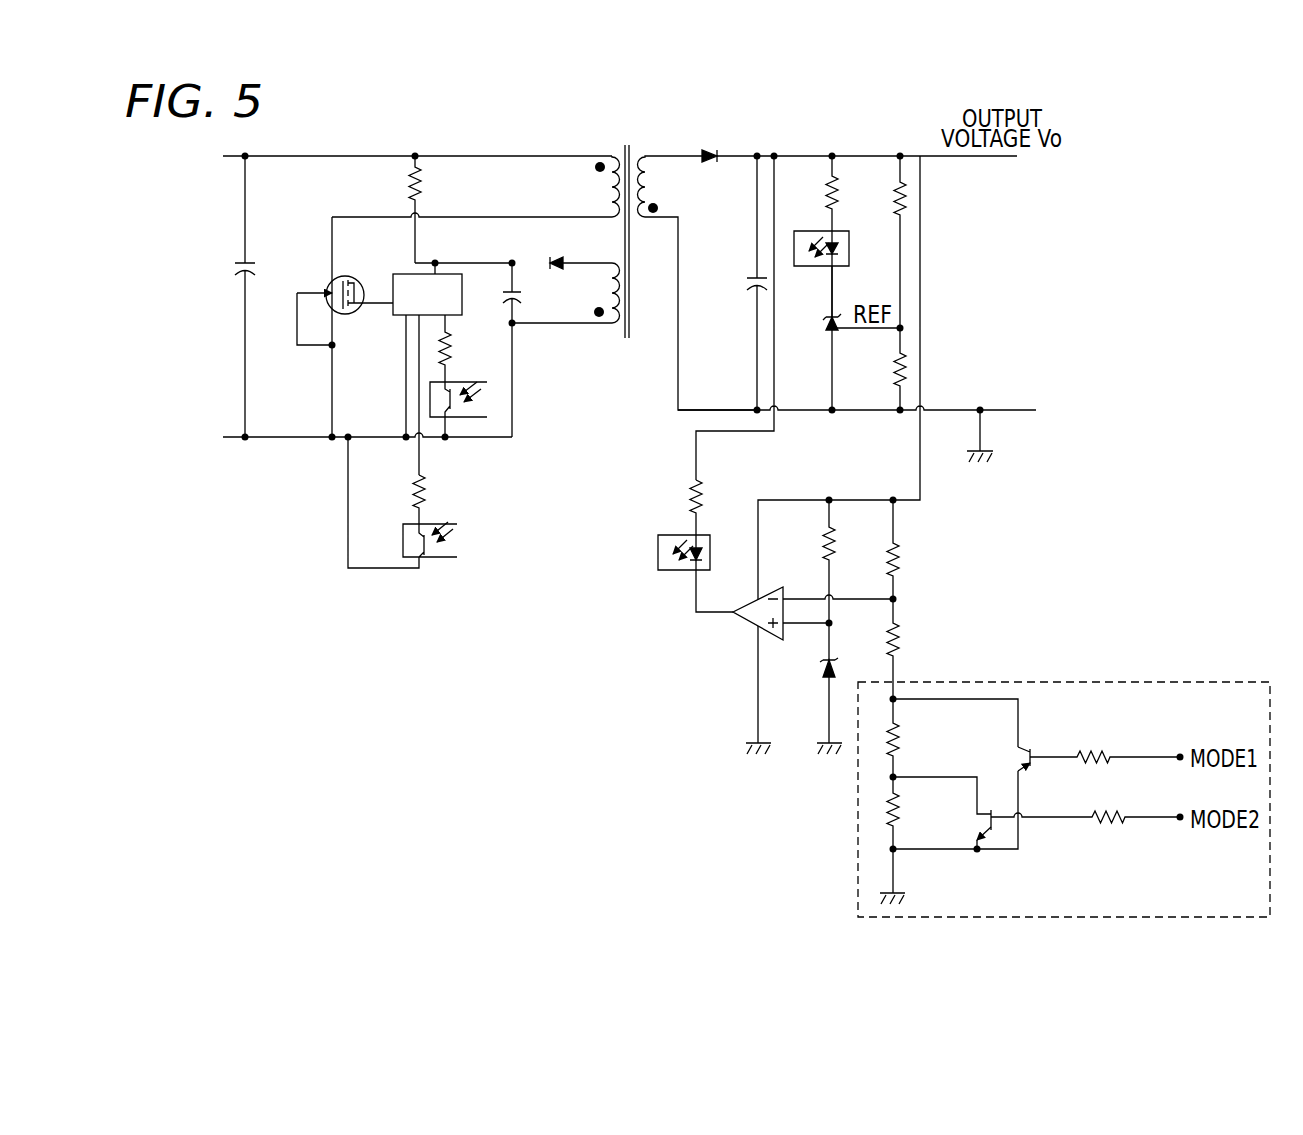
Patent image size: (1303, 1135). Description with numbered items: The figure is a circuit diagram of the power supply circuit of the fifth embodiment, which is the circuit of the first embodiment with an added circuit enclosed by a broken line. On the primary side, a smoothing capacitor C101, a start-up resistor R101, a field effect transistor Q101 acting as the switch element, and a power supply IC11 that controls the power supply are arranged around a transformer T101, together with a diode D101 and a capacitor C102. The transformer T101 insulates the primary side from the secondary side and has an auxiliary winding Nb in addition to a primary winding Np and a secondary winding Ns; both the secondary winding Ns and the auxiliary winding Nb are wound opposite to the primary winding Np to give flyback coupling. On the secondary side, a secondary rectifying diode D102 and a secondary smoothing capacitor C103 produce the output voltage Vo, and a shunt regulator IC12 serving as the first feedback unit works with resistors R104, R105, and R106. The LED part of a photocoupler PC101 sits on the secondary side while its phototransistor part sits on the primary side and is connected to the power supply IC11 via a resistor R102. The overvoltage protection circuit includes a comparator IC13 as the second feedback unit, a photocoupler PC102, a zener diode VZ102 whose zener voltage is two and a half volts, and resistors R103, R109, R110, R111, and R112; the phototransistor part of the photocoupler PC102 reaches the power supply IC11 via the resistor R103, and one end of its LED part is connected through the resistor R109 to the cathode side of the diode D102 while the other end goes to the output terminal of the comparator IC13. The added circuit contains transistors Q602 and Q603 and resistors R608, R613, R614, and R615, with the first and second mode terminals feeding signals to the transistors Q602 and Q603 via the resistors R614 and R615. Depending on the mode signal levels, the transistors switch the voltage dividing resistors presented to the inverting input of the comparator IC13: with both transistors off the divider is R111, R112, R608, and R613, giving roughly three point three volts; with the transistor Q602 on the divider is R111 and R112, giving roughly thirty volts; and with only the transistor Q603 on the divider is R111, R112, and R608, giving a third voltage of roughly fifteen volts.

The smoothing capacitor C101 is at (266, 296).
The start-up resistor R101 is at (390, 209).
The field effect transistor Q101 is at (345, 278).
The power supply IC IC11 is at (427, 369).
The diode D101 is at (557, 249).
The capacitor C102 is at (537, 350).
The resistor R102 is at (472, 348).
The photocoupler PC101 is at (467, 417).
The resistor R103 is at (444, 499).
The photocoupler PC102 is at (540, 524).
The transformer T101 is at (624, 226).
The primary winding Np is at (600, 186).
The secondary winding Ns is at (697, 283).
The auxiliary winding Nb is at (566, 293).
The secondary rectifying diode D102 is at (712, 173).
The secondary smoothing capacitor C103 is at (735, 283).
The resistor R104 is at (836, 185).
The resistor R105 is at (896, 196).
The resistor R106 is at (873, 369).
The shunt regulator IC12 is at (813, 338).
The resistor R109 is at (670, 507).
The resistor R110 is at (802, 580).
The resistor R111 is at (918, 549).
The resistor R112 is at (919, 649).
The comparator IC13 is at (744, 620).
The zener diode VZ102 is at (803, 700).
The resistor R608 is at (918, 738).
The resistor R613 is at (918, 813).
The transistor Q602 is at (998, 758).
The transistor Q603 is at (974, 826).
The resistor R614 is at (1105, 772).
The resistor R615 is at (1085, 833).